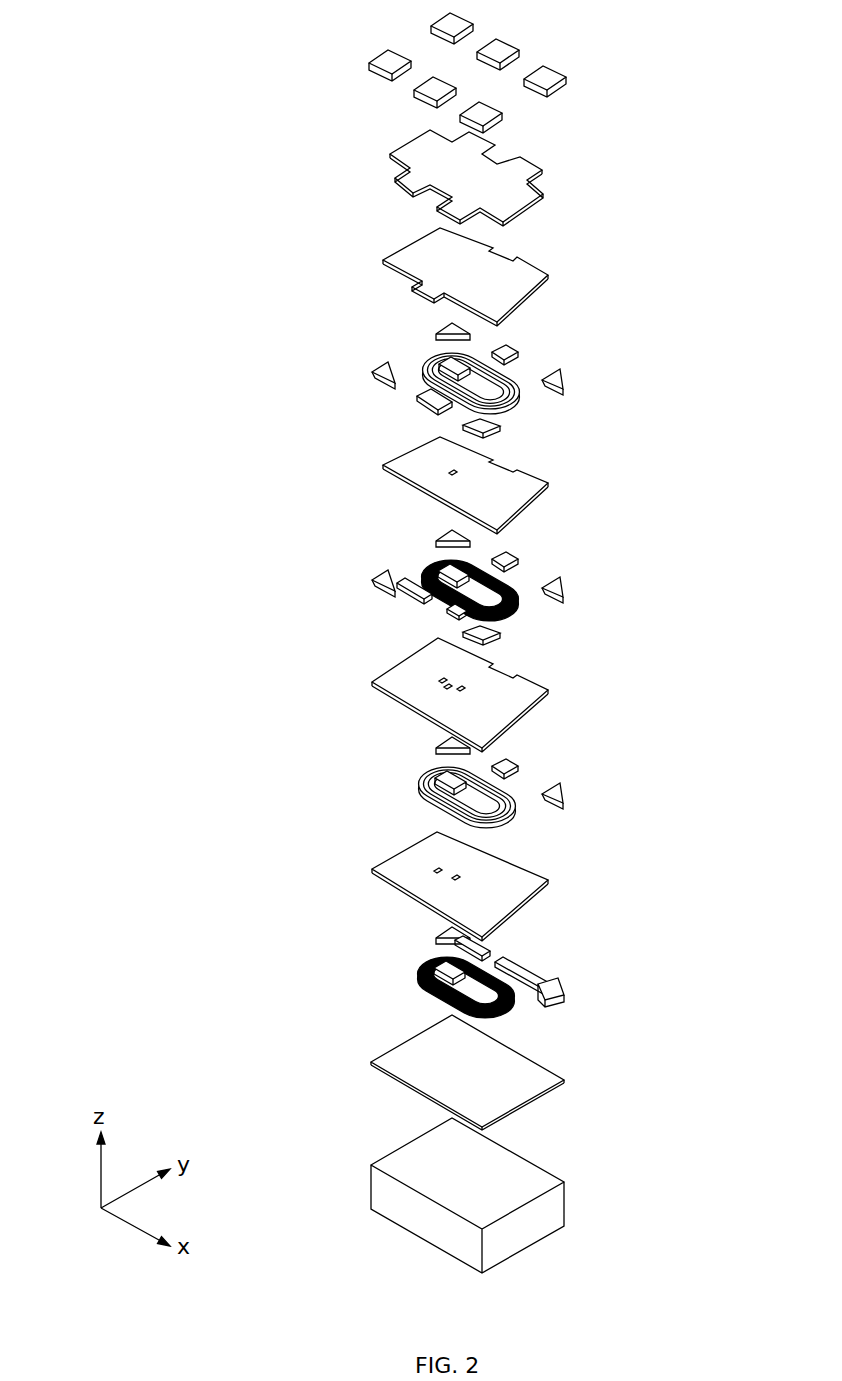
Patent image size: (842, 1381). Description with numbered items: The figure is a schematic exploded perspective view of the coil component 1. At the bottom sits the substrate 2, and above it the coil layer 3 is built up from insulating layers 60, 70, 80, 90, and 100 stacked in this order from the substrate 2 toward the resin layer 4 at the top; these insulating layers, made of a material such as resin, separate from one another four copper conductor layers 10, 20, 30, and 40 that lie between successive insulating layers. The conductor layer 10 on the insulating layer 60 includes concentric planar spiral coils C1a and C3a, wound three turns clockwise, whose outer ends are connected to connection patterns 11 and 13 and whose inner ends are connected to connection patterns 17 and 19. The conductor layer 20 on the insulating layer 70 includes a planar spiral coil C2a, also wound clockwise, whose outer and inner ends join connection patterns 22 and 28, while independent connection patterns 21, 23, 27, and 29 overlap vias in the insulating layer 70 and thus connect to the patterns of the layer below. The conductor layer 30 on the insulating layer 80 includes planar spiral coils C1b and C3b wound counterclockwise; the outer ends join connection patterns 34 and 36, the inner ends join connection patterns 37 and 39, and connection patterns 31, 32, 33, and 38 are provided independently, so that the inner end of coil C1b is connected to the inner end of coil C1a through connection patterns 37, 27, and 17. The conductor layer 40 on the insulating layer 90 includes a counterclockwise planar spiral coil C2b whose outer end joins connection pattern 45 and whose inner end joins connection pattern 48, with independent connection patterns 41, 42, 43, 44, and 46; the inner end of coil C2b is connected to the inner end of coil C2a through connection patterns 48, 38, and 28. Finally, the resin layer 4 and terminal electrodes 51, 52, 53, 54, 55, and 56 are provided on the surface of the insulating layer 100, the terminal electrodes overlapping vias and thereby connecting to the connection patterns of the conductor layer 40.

The coil component 1 is at (724, 24).
The substrate 2 is at (545, 1213).
The coil layer 3 is at (268, 1130).
The resin layer 4 is at (520, 190).
The terminal electrode 51 is at (547, 76).
The terminal electrode 52 is at (500, 50).
The terminal electrode 53 is at (455, 24).
The terminal electrode 54 is at (483, 112).
The terminal electrode 55 is at (437, 86).
The terminal electrode 56 is at (388, 60).
The conductor layer 10 is at (623, 983).
The connection pattern 11 is at (550, 978).
The connection pattern 13 is at (443, 933).
The connection pattern 17 is at (428, 965).
The connection pattern 19 is at (435, 1000).
The planar spiral coil C1a is at (522, 1000).
The planar spiral coil C3a is at (500, 1017).
The conductor layer 20 is at (623, 796).
The connection pattern 21 is at (560, 787).
The connection pattern 22 is at (508, 764).
The connection pattern 23 is at (447, 736).
The connection pattern 27 is at (452, 783).
The connection pattern 28 is at (420, 795).
The connection pattern 29 is at (445, 812).
The planar spiral coil C2a is at (520, 815).
The conductor layer 30 is at (623, 590).
The connection pattern 31 is at (560, 580).
The connection pattern 32 is at (508, 557).
The connection pattern 33 is at (447, 538).
The connection pattern 34 is at (495, 643).
The connection pattern 36 is at (372, 578).
The connection pattern 37 is at (453, 576).
The connection pattern 38 is at (415, 595).
The connection pattern 39 is at (450, 612).
The planar spiral coil C1b is at (522, 605).
The planar spiral coil C3b is at (500, 622).
The conductor layer 40 is at (622, 382).
The connection pattern 41 is at (560, 372).
The connection pattern 42 is at (508, 350).
The connection pattern 43 is at (447, 330).
The connection pattern 44 is at (495, 432).
The connection pattern 45 is at (420, 400).
The connection pattern 46 is at (372, 372).
The connection pattern 48 is at (455, 374).
The planar spiral coil C2b is at (520, 400).
The insulating layer 60 is at (510, 1090).
The insulating layer 70 is at (525, 892).
The insulating layer 80 is at (525, 700).
The insulating layer 90 is at (525, 494).
The insulating layer 100 is at (525, 292).